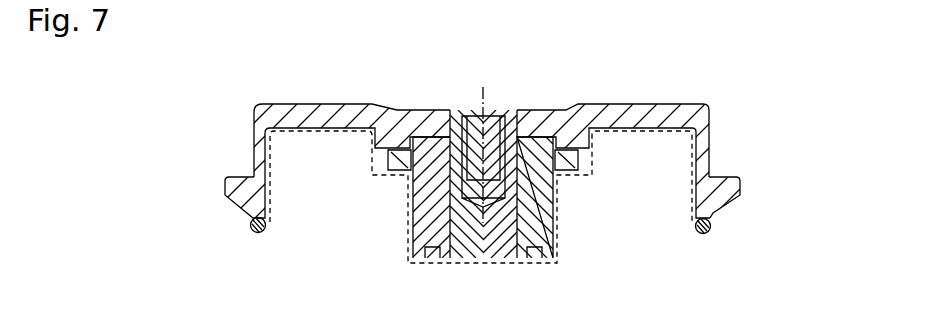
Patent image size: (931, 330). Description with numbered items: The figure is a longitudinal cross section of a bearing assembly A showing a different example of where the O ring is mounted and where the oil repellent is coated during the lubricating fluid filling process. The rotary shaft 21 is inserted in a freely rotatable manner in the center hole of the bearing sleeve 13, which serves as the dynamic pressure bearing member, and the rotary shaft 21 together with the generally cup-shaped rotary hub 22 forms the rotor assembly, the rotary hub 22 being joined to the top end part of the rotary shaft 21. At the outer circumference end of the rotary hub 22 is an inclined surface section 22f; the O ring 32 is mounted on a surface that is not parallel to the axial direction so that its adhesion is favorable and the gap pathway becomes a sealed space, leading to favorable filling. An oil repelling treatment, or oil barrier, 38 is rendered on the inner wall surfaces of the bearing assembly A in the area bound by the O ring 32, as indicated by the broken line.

The rotary shaft 21 is at (471, 110).
The rotary hub 22 is at (619, 103).
The inclined surface section 22f is at (727, 208).
The bearing sleeve 13 is at (408, 224).
The oil repelling treatment (oil barrier) 38 is at (558, 227).
The O ring 32 is at (708, 233).
The bearing assembly A is at (247, 135).